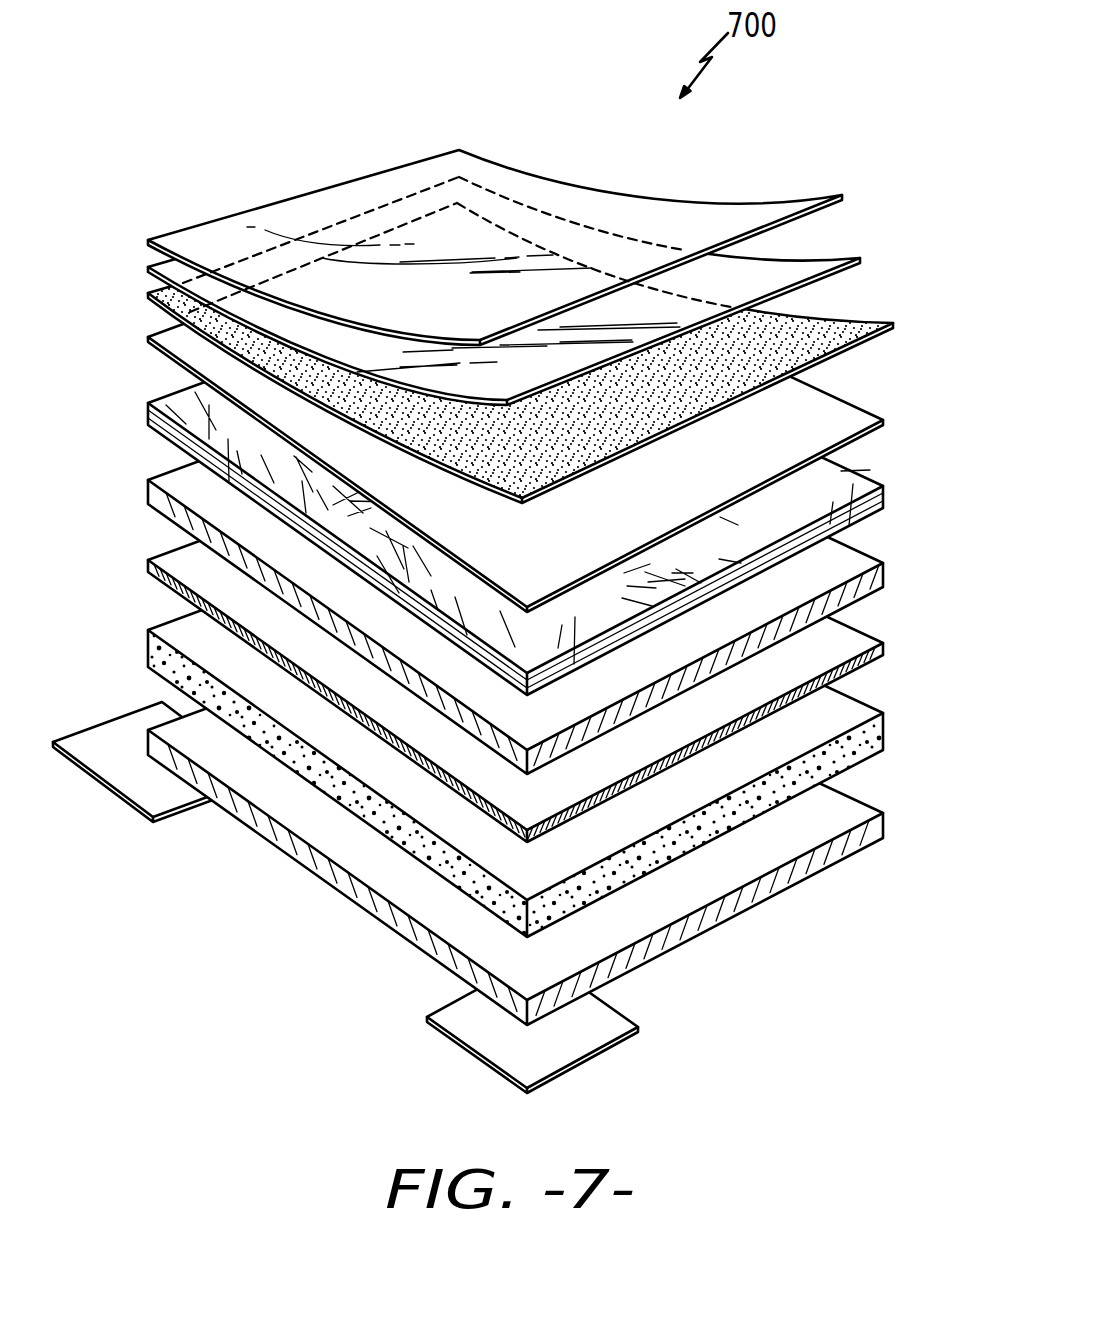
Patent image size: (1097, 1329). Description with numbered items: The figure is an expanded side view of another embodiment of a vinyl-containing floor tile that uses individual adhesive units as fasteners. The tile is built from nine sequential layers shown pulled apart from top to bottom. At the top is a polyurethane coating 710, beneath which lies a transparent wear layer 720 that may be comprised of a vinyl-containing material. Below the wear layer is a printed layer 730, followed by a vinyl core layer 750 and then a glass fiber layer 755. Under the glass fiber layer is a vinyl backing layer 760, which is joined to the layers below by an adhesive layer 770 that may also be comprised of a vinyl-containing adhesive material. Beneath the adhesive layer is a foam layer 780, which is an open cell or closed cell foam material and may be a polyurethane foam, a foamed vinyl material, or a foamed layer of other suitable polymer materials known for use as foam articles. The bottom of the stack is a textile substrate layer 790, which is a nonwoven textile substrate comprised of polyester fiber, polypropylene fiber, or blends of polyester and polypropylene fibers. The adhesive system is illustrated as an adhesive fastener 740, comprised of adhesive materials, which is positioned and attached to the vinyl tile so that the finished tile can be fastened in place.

The polyurethane coating 710 is at (842, 195).
The transparent wear layer 720 is at (860, 258).
The printed layer 730 is at (893, 323).
The adhesive fastener 740 is at (130, 805).
The vinyl core layer 750 is at (885, 420).
The glass fiber layer 755 is at (885, 496).
The vinyl backing layer 760 is at (885, 573).
The adhesive layer 770 is at (885, 647).
The foam layer 780 is at (885, 720).
The textile substrate layer 790 is at (885, 820).